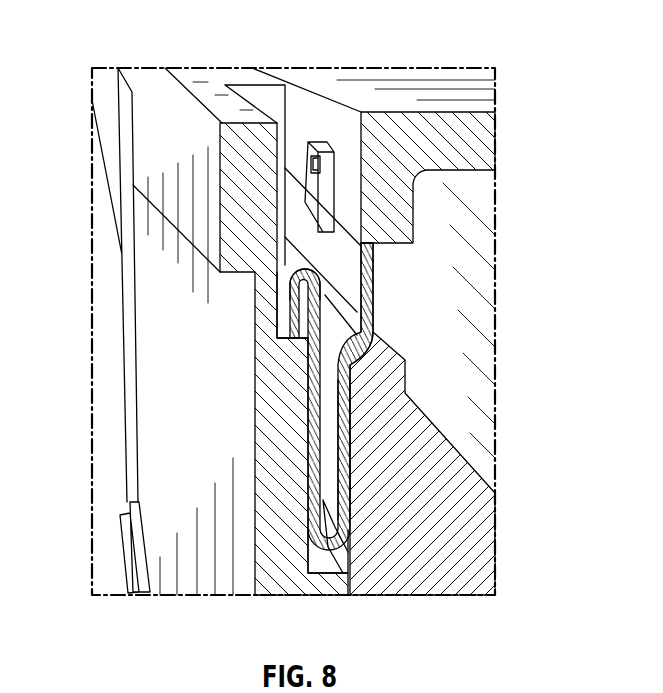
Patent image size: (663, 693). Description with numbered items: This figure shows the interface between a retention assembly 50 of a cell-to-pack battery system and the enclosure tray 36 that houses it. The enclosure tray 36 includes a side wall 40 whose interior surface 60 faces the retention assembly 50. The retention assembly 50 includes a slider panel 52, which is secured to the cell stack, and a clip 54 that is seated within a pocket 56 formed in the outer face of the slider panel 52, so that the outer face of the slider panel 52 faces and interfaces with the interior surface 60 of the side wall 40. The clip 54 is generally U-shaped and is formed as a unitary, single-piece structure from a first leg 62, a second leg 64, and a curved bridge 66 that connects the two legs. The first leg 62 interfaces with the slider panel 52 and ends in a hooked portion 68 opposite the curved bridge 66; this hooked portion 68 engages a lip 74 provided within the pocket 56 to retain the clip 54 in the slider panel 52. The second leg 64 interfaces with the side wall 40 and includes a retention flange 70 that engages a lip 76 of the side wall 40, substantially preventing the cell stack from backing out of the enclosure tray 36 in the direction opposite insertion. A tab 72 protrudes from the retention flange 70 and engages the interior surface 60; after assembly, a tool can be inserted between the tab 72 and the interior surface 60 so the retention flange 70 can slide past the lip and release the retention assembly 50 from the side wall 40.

The enclosure tray 36 is at (484, 144).
The side wall 40 is at (381, 374).
The retention assembly 50 is at (356, 540).
The slider panel 52 is at (183, 203).
The clip 54 is at (357, 464).
The pocket 56 is at (269, 107).
The interior surface 60 is at (357, 182).
The first leg 62 is at (307, 462).
The second leg 64 is at (349, 423).
The curved bridge 66 is at (330, 570).
The hooked portion 68 is at (296, 270).
The retention flange 70 is at (374, 282).
The tab 72 is at (318, 142).
The lip 74 is at (277, 333).
The lip 76 is at (375, 246).